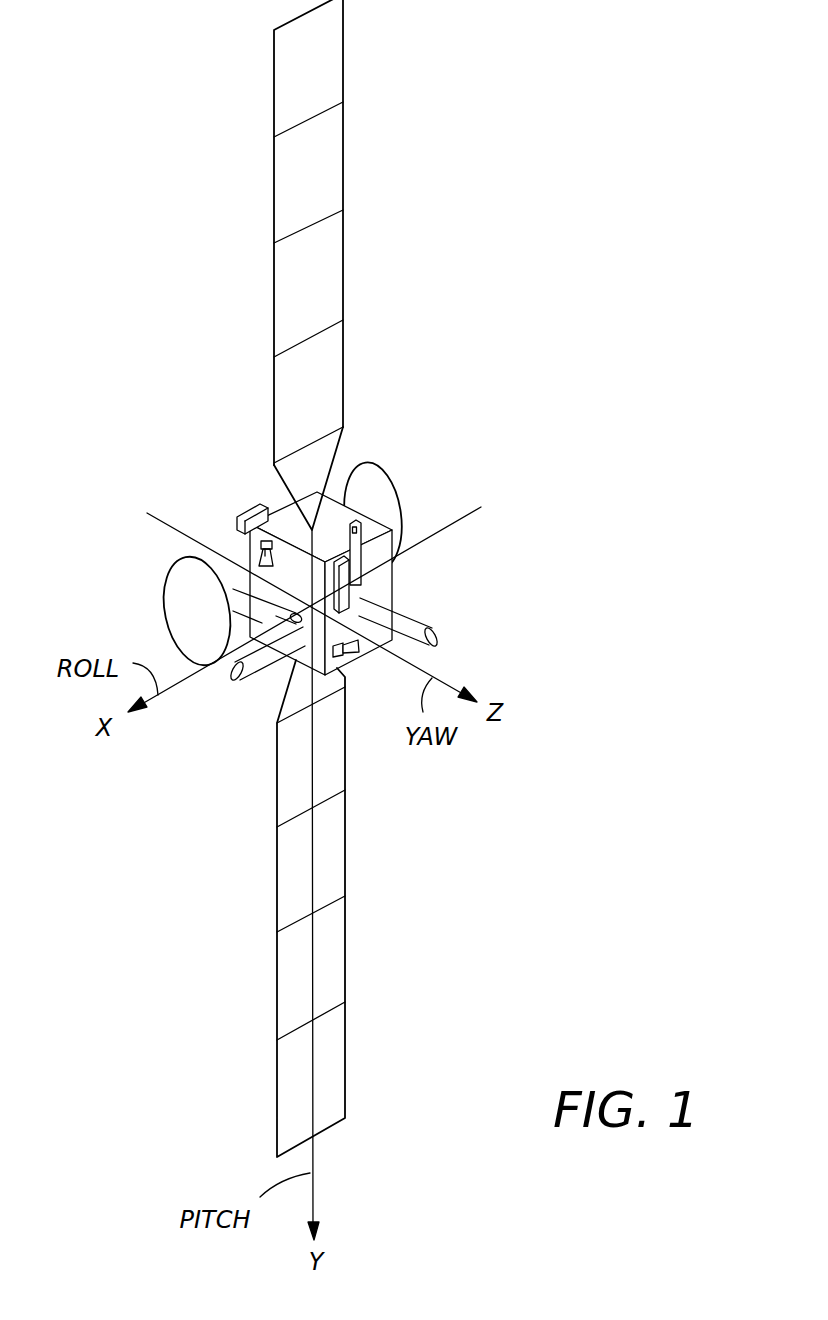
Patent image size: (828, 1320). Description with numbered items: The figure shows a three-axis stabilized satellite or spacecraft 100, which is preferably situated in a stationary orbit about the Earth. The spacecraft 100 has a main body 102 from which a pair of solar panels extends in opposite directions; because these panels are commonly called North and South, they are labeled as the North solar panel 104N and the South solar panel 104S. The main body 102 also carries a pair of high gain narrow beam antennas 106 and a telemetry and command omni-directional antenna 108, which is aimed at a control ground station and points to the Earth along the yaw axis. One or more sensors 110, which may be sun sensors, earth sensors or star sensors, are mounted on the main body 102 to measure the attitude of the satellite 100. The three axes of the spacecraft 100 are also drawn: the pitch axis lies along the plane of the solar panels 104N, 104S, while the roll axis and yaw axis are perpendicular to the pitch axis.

The spacecraft 100 is at (314, 578).
The main body 102 is at (382, 583).
The North solar panel 104N is at (323, 167).
The South solar panel 104S is at (337, 952).
The high gain narrow beam antenna 106 is at (388, 473).
The telemetry and command omni-directional antenna 108 is at (430, 622).
The sensor 110 is at (262, 533).